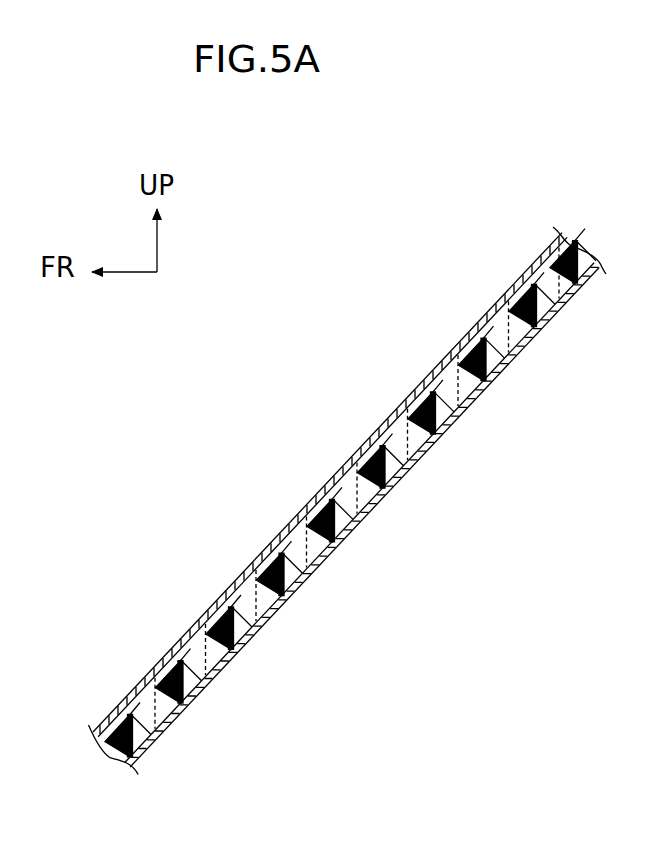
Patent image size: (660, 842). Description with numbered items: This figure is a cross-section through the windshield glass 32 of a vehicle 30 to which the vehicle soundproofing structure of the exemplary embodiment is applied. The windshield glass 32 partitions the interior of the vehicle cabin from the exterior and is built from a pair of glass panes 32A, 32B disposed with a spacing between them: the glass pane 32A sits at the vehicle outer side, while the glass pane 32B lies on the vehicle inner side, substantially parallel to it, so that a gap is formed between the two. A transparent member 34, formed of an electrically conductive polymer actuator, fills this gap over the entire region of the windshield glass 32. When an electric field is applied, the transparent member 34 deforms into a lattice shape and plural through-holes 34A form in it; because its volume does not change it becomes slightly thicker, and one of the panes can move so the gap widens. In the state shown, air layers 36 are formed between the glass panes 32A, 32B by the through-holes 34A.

The vehicle 30 is at (292, 383).
The windshield glass 32 is at (402, 398).
The glass pane 32A is at (273, 533).
The glass pane 32B is at (360, 527).
The transparent member 34 is at (498, 340).
The through-holes 34A is at (468, 398).
The air layers 36 is at (555, 280).